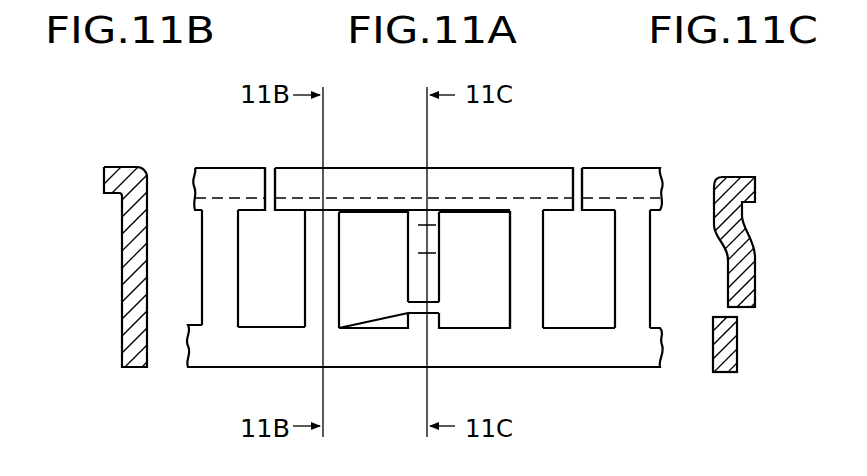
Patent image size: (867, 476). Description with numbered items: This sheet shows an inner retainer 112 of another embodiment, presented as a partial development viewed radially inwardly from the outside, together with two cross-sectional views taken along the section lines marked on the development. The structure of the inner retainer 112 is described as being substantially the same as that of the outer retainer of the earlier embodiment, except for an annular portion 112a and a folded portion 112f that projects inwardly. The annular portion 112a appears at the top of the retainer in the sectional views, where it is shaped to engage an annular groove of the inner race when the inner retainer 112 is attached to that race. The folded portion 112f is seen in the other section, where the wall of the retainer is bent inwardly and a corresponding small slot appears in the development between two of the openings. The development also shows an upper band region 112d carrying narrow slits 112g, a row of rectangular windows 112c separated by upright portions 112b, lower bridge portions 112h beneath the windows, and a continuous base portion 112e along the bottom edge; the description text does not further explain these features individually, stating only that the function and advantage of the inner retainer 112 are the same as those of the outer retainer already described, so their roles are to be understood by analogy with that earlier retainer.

In FIG. 11A, the inner retainer 112 is at (420, 270).
In FIG. 11B, the annular portion 112a is at (107, 176).
In FIG. 11C, the annular portion 112a is at (745, 183).
In FIG. 11B, the column portion 112b is at (130, 292).
In FIG. 11A, the column portion 112b is at (531, 316).
In FIG. 11A, the window opening 112c is at (247, 281).
In FIG. 11B, the upper flange portion 112d is at (130, 205).
In FIG. 11A, the upper flange portion 112d is at (463, 180).
In FIG. 11B, the base portion 112e is at (130, 343).
In FIG. 11A, the base portion 112e is at (602, 357).
In FIG. 11A, the folded portion 112f is at (413, 284).
In FIG. 11C, the folded portion 112f is at (747, 284).
In FIG. 11A, the slit 112g is at (270, 166).
In FIG. 11A, the bridge portion 112h is at (315, 325).